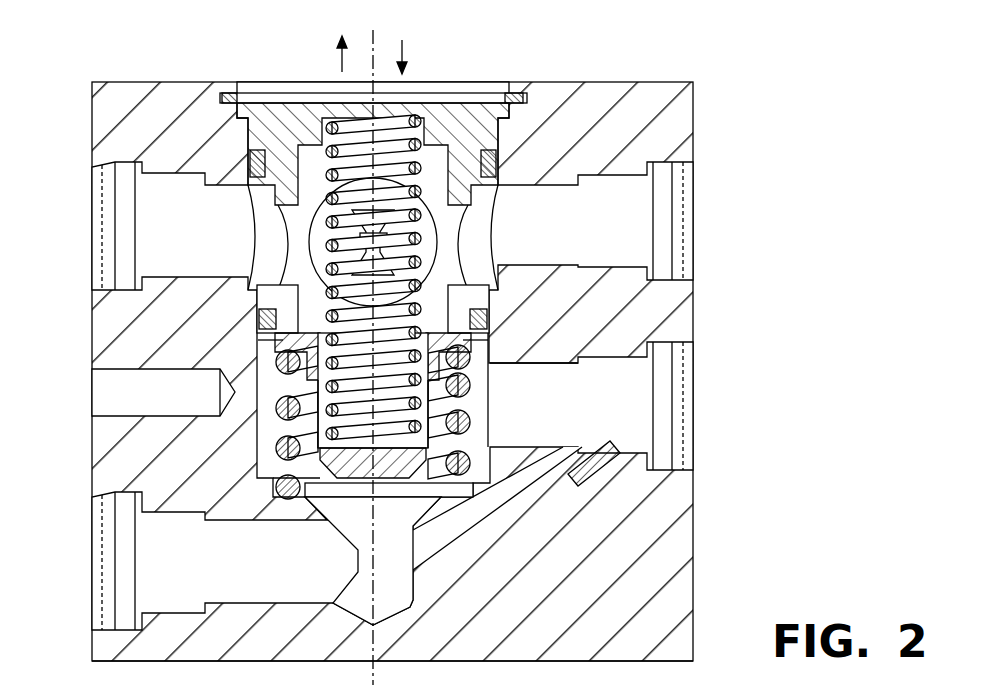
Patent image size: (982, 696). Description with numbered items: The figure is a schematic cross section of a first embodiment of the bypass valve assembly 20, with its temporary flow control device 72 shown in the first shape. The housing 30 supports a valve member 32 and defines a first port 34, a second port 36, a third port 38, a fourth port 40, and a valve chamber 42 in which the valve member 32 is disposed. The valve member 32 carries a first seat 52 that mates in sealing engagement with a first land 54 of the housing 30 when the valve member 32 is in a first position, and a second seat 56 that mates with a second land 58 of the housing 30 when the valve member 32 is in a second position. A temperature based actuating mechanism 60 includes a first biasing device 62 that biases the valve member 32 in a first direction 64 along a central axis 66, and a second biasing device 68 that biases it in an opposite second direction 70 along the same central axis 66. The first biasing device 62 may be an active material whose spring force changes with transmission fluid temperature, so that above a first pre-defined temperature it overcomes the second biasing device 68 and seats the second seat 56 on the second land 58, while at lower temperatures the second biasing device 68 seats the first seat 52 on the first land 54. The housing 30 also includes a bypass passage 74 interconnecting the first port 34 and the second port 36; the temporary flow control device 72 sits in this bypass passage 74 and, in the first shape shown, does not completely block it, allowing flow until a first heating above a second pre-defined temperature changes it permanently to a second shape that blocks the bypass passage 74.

The bypass valve assembly 20 is at (662, 70).
The housing 30 is at (676, 118).
The valve member 32 is at (443, 494).
The first port 34 is at (665, 352).
The second port 36 is at (95, 597).
The third port 38 is at (118, 165).
The fourth port 40 is at (670, 172).
The valve chamber 42 is at (492, 352).
The first seat 52 is at (320, 475).
The first land 54 is at (342, 516).
The second seat 56 is at (255, 292).
The second land 58 is at (326, 316).
The temperature based actuating mechanism 60 is at (432, 290).
The first biasing device 62 is at (282, 413).
The first direction 64 is at (340, 60).
The central axis 66 is at (372, 50).
The second biasing device 68 is at (432, 192).
The second direction 70 is at (404, 50).
The temporary flow control device 72 is at (627, 440).
The bypass passage 74 is at (472, 540).